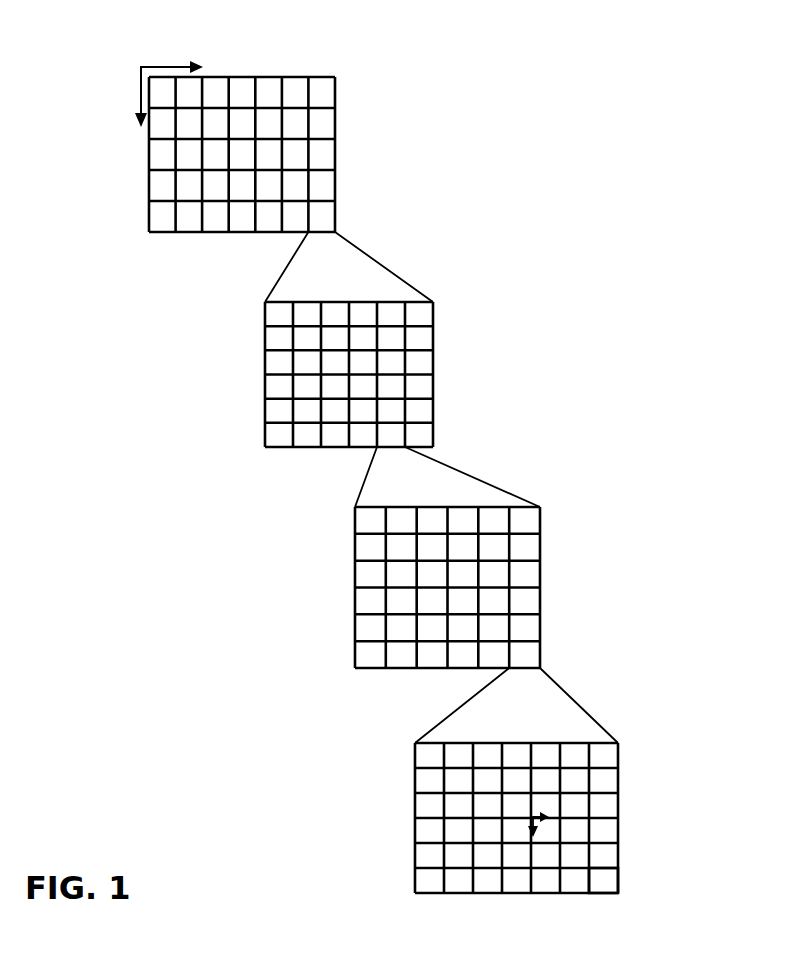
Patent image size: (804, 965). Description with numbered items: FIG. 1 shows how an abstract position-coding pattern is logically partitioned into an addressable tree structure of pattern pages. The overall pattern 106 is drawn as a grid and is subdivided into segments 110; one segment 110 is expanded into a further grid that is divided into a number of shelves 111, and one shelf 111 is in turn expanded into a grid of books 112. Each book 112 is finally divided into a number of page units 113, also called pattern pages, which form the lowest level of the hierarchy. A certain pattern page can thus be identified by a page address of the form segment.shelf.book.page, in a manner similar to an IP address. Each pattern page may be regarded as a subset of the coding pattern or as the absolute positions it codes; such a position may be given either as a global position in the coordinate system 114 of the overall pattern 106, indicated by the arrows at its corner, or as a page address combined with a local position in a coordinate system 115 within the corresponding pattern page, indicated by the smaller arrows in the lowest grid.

The overall pattern 106 is at (336, 122).
The segment 110 is at (321, 219).
The shelf 111 is at (428, 439).
The book 112 is at (533, 653).
The page unit 113 is at (606, 886).
The coordinate system of the overall pattern 114 is at (157, 66).
The coordinate system within the pattern page 115 is at (540, 820).